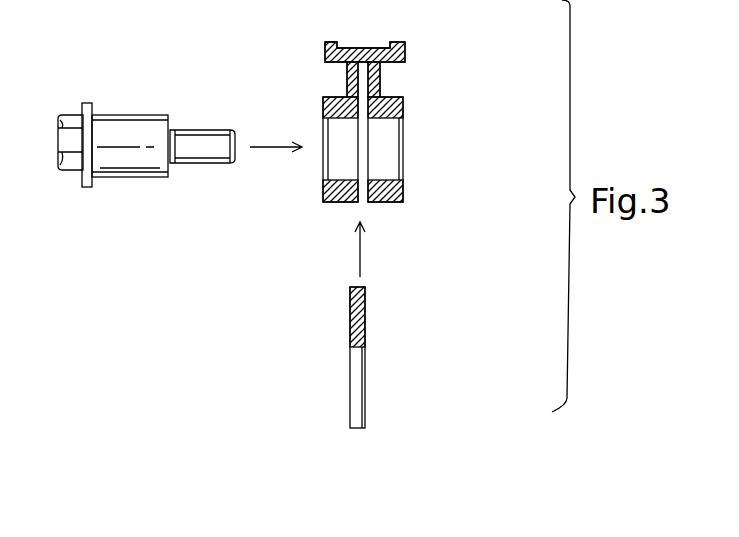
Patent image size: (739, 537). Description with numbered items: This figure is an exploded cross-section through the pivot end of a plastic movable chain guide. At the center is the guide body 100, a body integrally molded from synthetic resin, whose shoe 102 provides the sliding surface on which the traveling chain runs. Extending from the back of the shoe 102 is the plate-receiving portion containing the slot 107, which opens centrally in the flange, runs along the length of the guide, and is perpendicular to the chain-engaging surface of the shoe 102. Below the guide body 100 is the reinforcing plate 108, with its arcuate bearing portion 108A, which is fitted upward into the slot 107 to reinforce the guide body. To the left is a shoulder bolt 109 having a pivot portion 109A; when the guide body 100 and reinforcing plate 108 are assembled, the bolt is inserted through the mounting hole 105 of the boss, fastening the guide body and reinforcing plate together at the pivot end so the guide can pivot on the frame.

The guide body 100 is at (502, 24).
The shoe 102 is at (402, 53).
The mounting hole 105 is at (385, 176).
The slot 107 is at (362, 107).
The reinforcing plate 108 is at (367, 322).
The arcuate bearing portion 108A is at (367, 352).
The shoulder bolt 109 is at (172, 194).
The pivot portion 109A is at (133, 127).